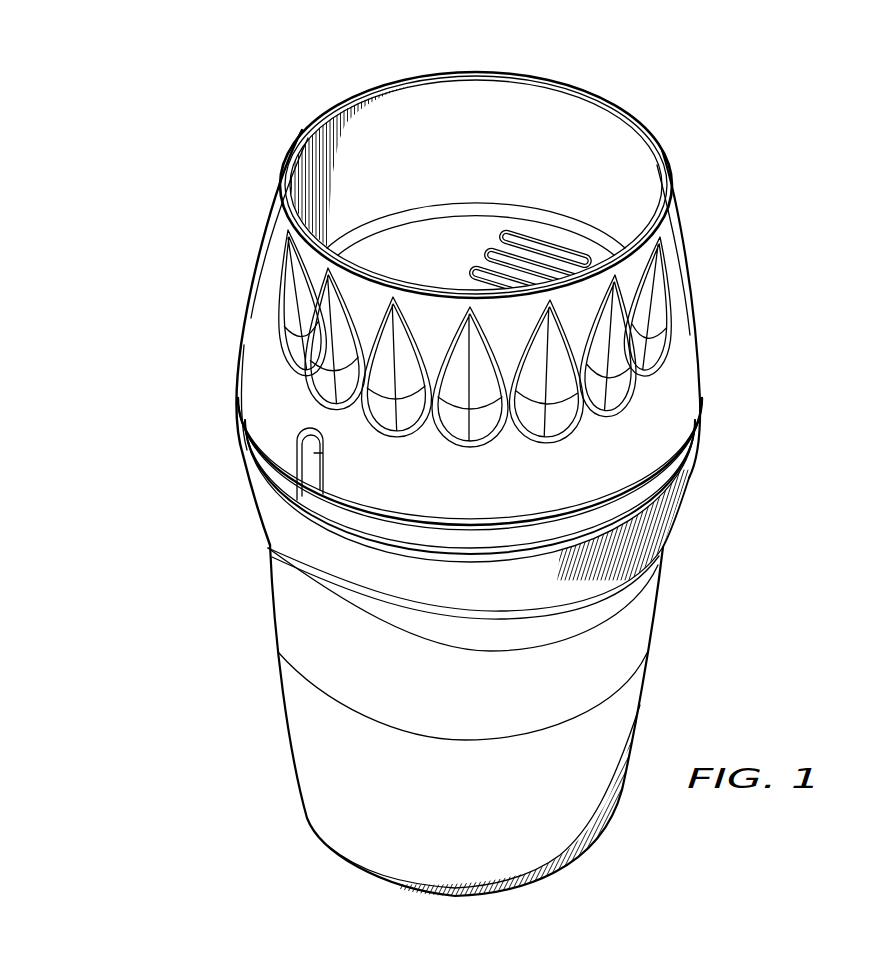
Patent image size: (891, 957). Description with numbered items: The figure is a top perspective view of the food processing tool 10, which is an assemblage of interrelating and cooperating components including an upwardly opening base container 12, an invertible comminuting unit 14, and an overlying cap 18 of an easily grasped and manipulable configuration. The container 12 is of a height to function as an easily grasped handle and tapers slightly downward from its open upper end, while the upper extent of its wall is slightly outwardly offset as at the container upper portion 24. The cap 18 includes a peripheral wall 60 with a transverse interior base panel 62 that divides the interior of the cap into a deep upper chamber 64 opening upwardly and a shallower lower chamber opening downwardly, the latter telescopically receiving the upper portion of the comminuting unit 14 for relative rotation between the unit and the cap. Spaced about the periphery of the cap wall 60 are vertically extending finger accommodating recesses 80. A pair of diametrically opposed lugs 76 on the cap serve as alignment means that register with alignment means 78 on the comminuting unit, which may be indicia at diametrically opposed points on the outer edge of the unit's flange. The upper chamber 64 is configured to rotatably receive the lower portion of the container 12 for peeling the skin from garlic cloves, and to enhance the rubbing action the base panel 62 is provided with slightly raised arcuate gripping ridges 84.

The processing tool 10 is at (776, 237).
The base container 12 is at (658, 684).
The comminuting unit 14 is at (703, 420).
The cap 18 is at (675, 194).
The container upper portion 24 is at (688, 496).
The peripheral wall 60 is at (277, 403).
The base panel 62 is at (427, 233).
The upper chamber 64 is at (600, 123).
The lugs 76 is at (307, 457).
The alignment means 78 is at (283, 494).
The finger accommodating recesses 80 is at (562, 404).
The gripping ridges 84 is at (484, 256).